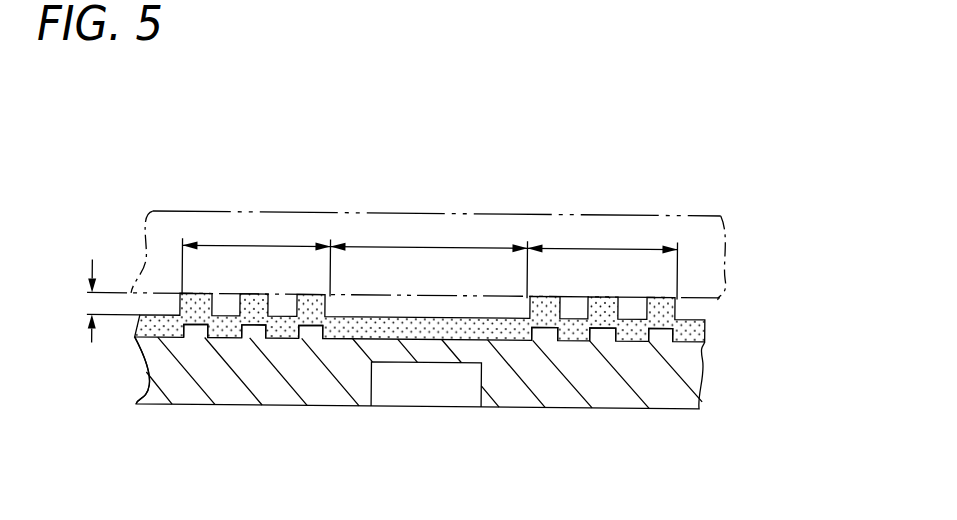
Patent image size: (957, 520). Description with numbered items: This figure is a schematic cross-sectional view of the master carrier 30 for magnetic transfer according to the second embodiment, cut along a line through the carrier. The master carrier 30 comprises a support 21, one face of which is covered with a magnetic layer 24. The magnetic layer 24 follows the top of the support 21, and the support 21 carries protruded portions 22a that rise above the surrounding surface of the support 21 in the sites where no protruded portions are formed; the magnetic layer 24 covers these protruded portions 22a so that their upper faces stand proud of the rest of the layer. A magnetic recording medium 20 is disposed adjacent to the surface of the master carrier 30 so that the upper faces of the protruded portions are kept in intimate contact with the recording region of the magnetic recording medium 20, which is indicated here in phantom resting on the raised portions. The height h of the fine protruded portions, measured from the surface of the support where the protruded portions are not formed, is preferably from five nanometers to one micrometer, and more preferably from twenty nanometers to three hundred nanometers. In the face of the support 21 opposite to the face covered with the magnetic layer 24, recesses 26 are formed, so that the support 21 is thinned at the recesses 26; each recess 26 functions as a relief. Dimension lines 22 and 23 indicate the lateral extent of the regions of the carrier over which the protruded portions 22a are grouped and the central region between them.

The magnetic recording medium 20 is at (178, 198).
The support 21 is at (338, 398).
The outer region width 22 is at (254, 245).
The protrusions 22a is at (203, 308).
The central region width 23 is at (432, 245).
The magnetic layer 24 is at (705, 331).
The recesses 26 is at (373, 377).
The master carrier 30 is at (126, 387).
The height h is at (106, 301).